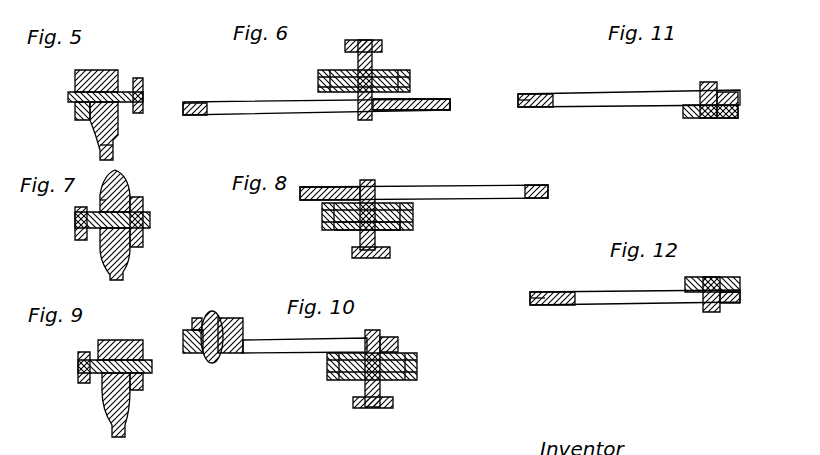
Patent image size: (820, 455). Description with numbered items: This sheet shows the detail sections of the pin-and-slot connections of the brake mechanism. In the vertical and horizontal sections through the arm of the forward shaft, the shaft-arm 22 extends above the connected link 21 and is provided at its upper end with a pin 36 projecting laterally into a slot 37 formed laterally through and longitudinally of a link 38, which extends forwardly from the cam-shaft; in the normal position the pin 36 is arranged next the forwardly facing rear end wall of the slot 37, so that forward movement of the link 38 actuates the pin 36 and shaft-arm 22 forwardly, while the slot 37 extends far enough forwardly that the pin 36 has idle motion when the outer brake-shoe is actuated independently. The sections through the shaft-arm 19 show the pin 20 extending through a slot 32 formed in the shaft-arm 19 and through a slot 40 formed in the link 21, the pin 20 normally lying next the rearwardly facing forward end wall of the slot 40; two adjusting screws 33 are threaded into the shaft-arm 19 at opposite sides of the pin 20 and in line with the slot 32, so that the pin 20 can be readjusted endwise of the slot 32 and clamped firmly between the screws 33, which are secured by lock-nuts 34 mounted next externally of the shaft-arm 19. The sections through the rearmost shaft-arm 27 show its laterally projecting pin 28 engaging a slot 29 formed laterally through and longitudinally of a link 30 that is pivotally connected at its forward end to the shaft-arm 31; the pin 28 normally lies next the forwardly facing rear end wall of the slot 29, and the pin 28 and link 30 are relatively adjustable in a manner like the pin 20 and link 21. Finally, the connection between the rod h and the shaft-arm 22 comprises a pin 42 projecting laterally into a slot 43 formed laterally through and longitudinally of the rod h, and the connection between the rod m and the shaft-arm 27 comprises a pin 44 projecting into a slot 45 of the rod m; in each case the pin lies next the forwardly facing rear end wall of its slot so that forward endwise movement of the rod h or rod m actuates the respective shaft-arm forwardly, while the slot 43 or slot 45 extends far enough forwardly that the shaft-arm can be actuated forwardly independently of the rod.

In FIG. 7, the shaft-arm 19 is at (122, 185).
In FIG. 8, the shaft-arm 19 is at (393, 233).
In FIG. 7, the pin 20 is at (153, 218).
In FIG. 8, the pin 20 is at (367, 182).
In FIG. 7, the link 21 is at (143, 247).
In FIG. 8, the link 21 is at (310, 197).
In FIG. 5, the shaft-arm 22 is at (100, 145).
In FIG. 6, the shaft-arm 22 is at (377, 75).
In FIG. 11, the shaft-arm 22 is at (733, 118).
In FIG. 9, the shaft-arm 27 is at (105, 403).
In FIG. 10, the shaft-arm 27 is at (350, 380).
In FIG. 12, the shaft-arm 27 is at (690, 280).
In FIG. 9, the pin 28 is at (152, 367).
In FIG. 10, the pin 28 is at (372, 333).
In FIG. 9, the slot 29 is at (142, 375).
In FIG. 10, the slot 29 is at (243, 342).
In FIG. 9, the link 30 is at (137, 342).
In FIG. 10, the link 30 is at (230, 357).
In FIG. 10, the shaft-arm 31 is at (237, 330).
In FIG. 7, the slot 32 is at (100, 200).
In FIG. 8, the slot 32 is at (352, 235).
In FIG. 8, the adjusting screws 33 is at (327, 215).
In FIG. 8, the lock-nuts 34 is at (333, 230).
In FIG. 5, the pin 36 is at (70, 97).
In FIG. 6, the pin 36 is at (360, 117).
In FIG. 5, the slot 37 is at (78, 105).
In FIG. 6, the slot 37 is at (193, 102).
In FIG. 5, the link 38 is at (82, 120).
In FIG. 6, the link 38 is at (433, 98).
In FIG. 7, the slot 40 is at (137, 213).
In FIG. 8, the slot 40 is at (360, 192).
In FIG. 11, the pin 42 is at (708, 82).
In FIG. 11, the slot 43 is at (532, 95).
In FIG. 12, the pin 44 is at (712, 278).
In FIG. 12, the slot 45 is at (572, 305).
In FIG. 11, the rod h is at (522, 107).
In FIG. 12, the rod m is at (533, 305).